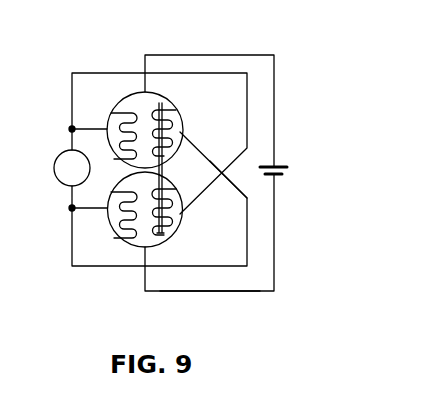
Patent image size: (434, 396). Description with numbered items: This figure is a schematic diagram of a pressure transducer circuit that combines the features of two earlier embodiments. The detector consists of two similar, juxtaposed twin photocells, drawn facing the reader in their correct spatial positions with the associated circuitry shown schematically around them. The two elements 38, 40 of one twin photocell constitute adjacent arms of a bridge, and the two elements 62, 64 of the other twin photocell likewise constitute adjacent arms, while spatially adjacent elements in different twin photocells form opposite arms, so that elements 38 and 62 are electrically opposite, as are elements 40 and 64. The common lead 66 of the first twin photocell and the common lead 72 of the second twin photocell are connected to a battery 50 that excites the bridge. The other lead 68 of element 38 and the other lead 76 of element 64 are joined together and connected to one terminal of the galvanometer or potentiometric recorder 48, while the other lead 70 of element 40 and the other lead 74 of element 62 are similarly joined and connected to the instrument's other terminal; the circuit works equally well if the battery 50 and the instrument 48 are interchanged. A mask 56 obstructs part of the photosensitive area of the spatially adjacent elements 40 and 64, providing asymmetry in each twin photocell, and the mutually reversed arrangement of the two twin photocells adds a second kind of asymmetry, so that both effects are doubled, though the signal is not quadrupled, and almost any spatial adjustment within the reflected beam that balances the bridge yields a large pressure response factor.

The photocell element 38 is at (120, 107).
The photocell element 40 is at (175, 112).
The galvanometer or potentiometric recorder 48 is at (62, 183).
The battery 50 is at (283, 175).
The mask 56 is at (162, 104).
The photocell element 62 is at (115, 224).
The photocell element 64 is at (175, 226).
The common lead 66 is at (175, 55).
The lead 68 is at (88, 128).
The lead 70 is at (204, 147).
The common lead 72 is at (218, 291).
The lead 74 is at (85, 209).
The lead 76 is at (105, 73).